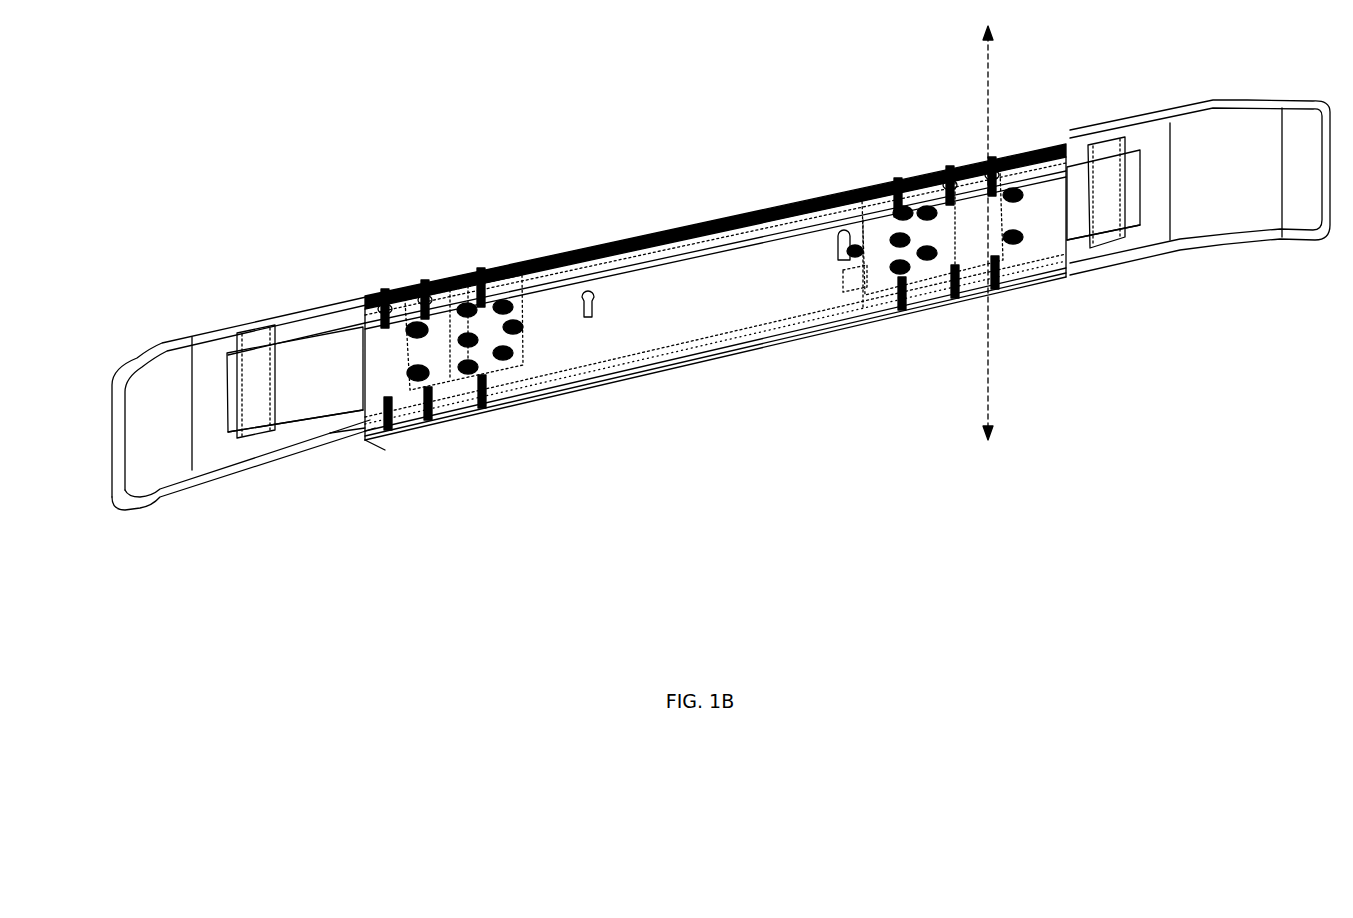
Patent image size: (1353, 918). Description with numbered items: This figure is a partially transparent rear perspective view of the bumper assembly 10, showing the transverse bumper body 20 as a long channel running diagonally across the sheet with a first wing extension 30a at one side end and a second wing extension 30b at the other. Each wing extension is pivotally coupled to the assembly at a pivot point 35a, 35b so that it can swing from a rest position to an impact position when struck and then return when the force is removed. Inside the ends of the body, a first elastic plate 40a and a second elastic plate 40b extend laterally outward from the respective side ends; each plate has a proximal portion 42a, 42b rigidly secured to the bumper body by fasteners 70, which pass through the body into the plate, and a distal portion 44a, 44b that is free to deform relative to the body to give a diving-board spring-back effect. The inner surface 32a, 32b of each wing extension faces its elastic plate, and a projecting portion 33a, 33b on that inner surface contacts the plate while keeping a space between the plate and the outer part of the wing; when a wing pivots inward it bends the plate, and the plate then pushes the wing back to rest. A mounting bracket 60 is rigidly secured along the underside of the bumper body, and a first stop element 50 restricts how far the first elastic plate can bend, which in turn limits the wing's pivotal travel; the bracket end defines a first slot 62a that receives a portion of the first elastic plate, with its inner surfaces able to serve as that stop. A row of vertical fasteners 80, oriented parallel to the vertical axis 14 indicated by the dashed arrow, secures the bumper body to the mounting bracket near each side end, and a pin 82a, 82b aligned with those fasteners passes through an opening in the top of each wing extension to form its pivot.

The bumper assembly 10 is at (178, 150).
The vertical axis 14 is at (987, 86).
The transverse bumper body 20 is at (658, 232).
The first wing extension 30a is at (150, 383).
The second wing extension 30b is at (1262, 215).
The inner surface of first wing extension 32a is at (167, 423).
The inner surface of second wing extension 32b is at (1240, 190).
The projecting portion 33a is at (247, 340).
The projecting portion 33b is at (1120, 142).
The pivot point 35a is at (415, 302).
The pivot point 35b is at (972, 160).
The first elastic plate 40a is at (307, 355).
The second elastic plate 40b is at (1128, 188).
The proximal portion of first elastic plate 42a is at (478, 392).
The proximal portion of second elastic plate 42b is at (1012, 278).
The distal portion of first elastic plate 44a is at (227, 440).
The distal portion of second elastic plate 44b is at (1133, 217).
The first stop element 50 is at (372, 434).
The mounting bracket 60 is at (647, 333).
The first slot 62a is at (348, 435).
The fastener 70 is at (496, 365).
The vertical fastener 80 is at (425, 285).
The pin 82a is at (386, 300).
The pin 82b is at (994, 150).